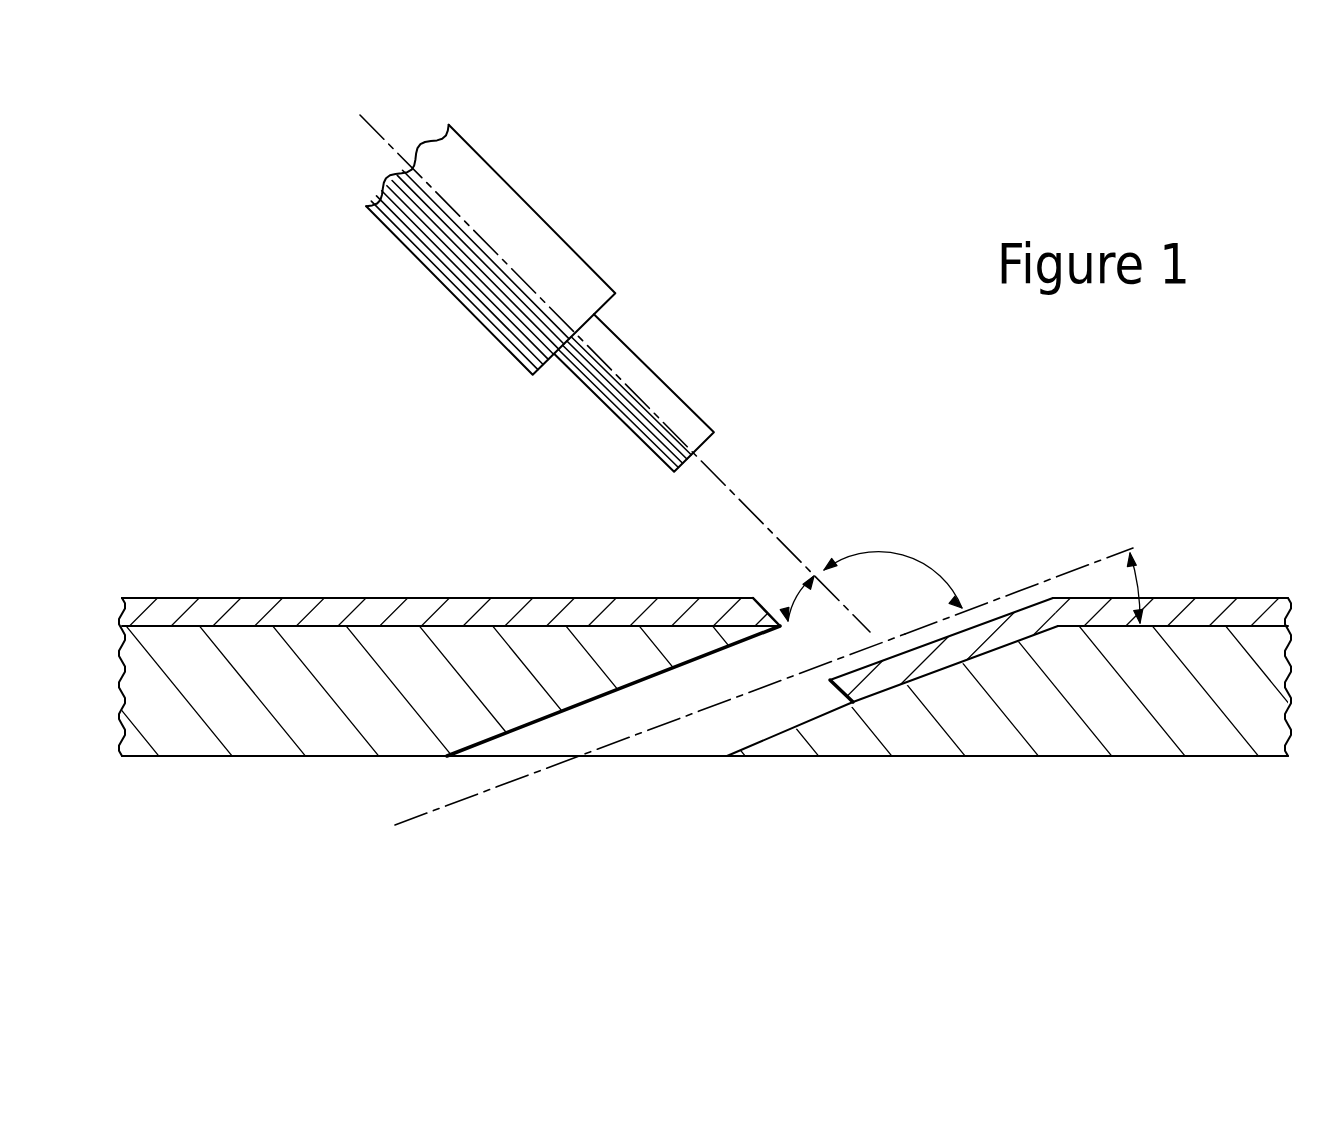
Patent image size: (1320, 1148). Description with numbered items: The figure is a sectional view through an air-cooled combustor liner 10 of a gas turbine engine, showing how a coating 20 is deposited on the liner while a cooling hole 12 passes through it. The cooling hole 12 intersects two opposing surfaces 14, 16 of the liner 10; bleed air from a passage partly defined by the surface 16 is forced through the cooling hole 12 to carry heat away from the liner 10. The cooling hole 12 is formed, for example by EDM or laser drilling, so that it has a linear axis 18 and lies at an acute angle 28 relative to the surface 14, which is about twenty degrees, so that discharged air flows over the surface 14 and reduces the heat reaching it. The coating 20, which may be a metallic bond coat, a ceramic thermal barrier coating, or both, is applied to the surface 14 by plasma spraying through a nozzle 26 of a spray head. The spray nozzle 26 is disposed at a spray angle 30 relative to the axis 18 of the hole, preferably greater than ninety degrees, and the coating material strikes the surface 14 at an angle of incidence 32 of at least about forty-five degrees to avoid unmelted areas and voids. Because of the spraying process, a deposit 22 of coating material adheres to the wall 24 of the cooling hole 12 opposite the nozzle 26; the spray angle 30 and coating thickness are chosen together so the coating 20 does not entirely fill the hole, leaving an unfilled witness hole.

The combustor liner 10 is at (672, 693).
The cooling hole 12 is at (632, 747).
The surface 14 is at (410, 626).
The surface 16 is at (933, 757).
The axis 18 is at (1097, 557).
The coating 20 is at (299, 600).
The deposit 22 is at (1000, 617).
The wall 24 is at (740, 735).
The nozzle 26 is at (655, 368).
The acute angle 28 is at (1140, 587).
The spray angle 30 is at (900, 555).
The angle of incidence 32 is at (788, 618).